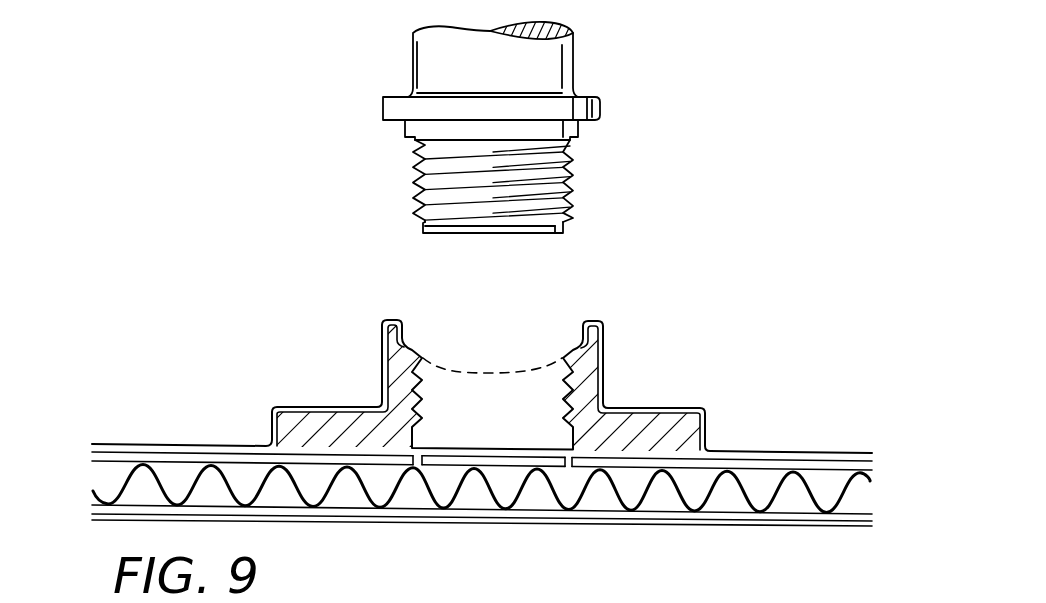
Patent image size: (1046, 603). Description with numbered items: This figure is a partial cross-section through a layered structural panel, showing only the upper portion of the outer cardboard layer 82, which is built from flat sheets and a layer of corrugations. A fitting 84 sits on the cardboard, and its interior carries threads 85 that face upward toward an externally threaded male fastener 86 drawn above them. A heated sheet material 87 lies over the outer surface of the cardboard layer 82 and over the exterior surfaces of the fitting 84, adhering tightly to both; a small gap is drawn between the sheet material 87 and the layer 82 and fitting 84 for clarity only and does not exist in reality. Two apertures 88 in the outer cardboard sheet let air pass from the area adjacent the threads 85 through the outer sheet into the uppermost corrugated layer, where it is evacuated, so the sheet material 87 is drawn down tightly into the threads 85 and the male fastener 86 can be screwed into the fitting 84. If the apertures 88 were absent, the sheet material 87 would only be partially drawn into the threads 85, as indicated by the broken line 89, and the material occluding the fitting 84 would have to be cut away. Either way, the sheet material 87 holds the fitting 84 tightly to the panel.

The outer cardboard layer 82 is at (876, 485).
The fitting 84 is at (660, 432).
The threads 85 is at (420, 393).
The externally threaded male fastener 86 is at (577, 145).
The heated sheet material 87 is at (135, 445).
The apertures 88 is at (427, 500).
The broken line 89 is at (458, 362).